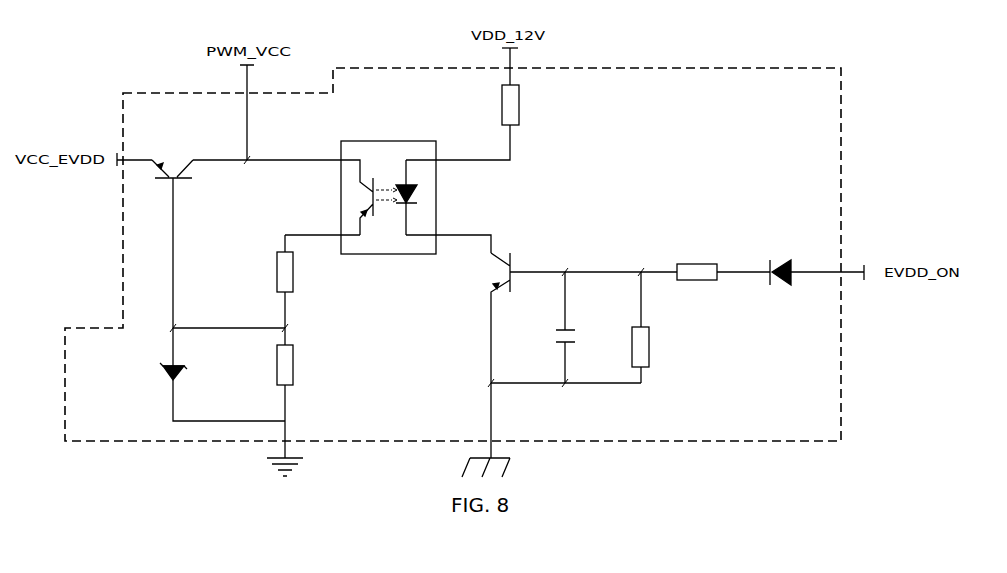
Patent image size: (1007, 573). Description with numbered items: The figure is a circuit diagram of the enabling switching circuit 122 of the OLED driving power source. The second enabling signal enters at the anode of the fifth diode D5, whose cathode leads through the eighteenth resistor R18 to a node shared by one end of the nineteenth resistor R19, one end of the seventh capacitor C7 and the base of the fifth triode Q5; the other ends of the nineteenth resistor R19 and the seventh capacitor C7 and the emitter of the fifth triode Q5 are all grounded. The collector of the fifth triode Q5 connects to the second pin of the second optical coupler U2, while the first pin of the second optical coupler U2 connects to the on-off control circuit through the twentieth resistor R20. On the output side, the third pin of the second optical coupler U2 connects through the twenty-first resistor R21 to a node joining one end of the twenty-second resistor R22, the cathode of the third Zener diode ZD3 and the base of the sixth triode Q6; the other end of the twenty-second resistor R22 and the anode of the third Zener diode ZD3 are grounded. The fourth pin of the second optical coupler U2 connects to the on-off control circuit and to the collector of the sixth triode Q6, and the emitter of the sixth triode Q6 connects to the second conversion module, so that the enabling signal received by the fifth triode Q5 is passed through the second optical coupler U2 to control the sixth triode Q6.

The enabling switching circuit 122 is at (123, 292).
The sixth triode Q6 is at (172, 229).
The fifth triode Q5 is at (569, 355).
The second optical coupler U2 is at (388, 187).
The eighteenth resistor R18 is at (723, 263).
The nineteenth resistor R19 is at (657, 327).
The twentieth resistor R20 is at (478, 104).
The twenty-first resistor R21 is at (300, 290).
The twenty-second resistor R22 is at (300, 401).
The seventh capacitor C7 is at (552, 327).
The fifth diode D5 is at (817, 259).
The third Zener diode ZD3 is at (200, 374).